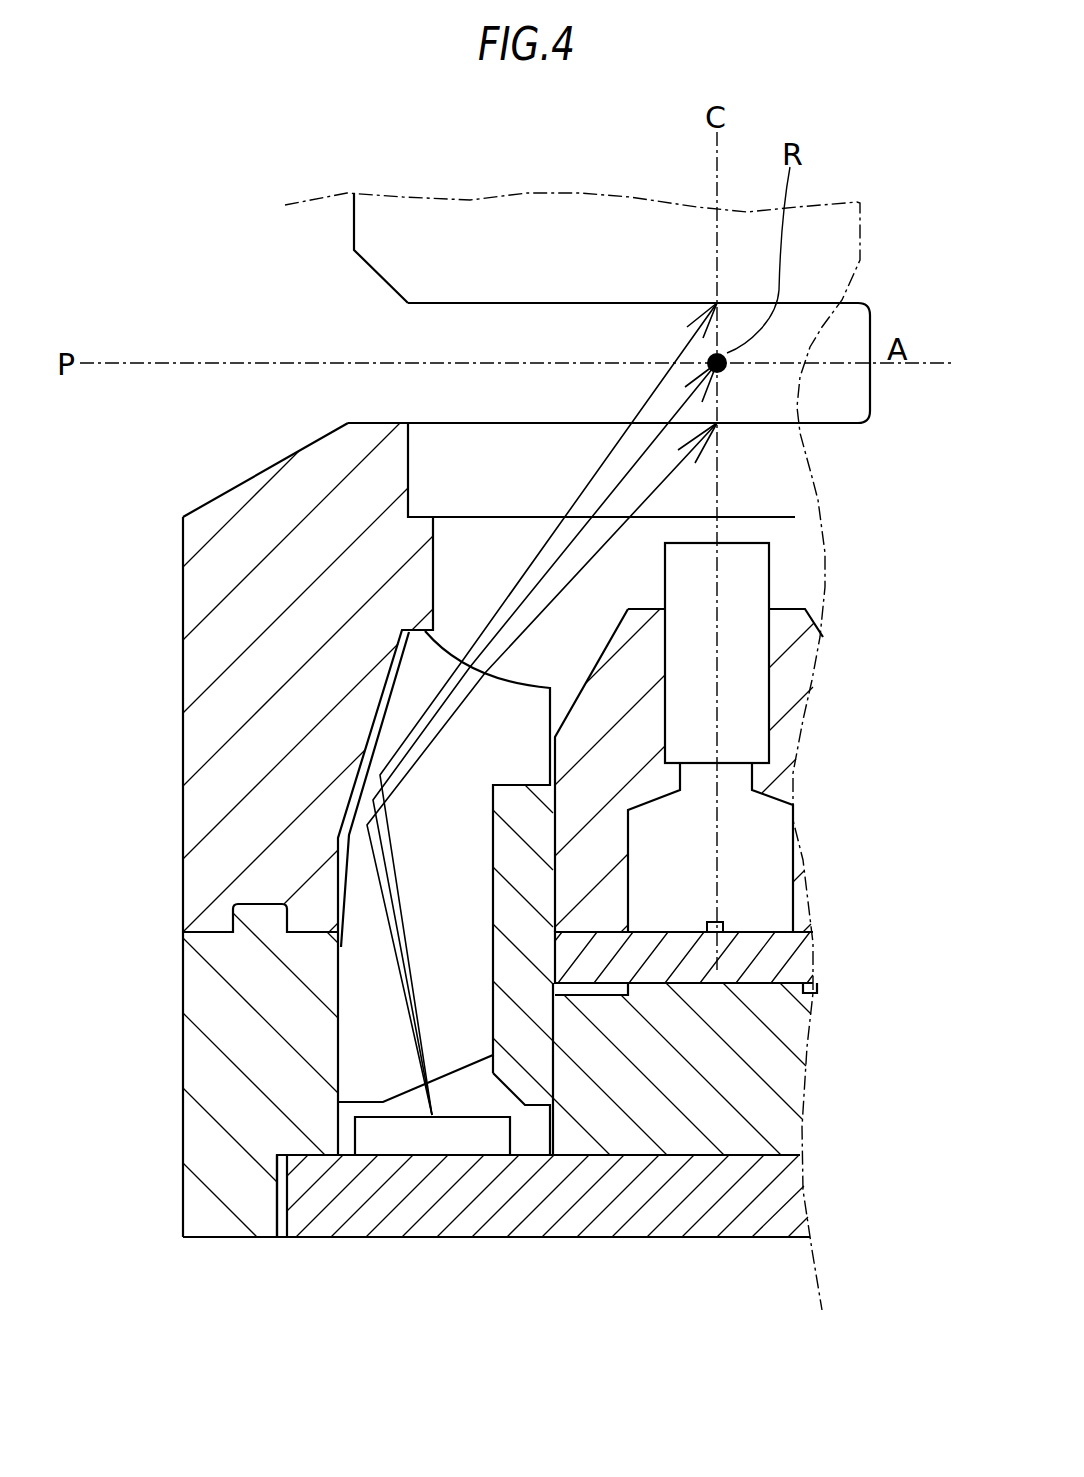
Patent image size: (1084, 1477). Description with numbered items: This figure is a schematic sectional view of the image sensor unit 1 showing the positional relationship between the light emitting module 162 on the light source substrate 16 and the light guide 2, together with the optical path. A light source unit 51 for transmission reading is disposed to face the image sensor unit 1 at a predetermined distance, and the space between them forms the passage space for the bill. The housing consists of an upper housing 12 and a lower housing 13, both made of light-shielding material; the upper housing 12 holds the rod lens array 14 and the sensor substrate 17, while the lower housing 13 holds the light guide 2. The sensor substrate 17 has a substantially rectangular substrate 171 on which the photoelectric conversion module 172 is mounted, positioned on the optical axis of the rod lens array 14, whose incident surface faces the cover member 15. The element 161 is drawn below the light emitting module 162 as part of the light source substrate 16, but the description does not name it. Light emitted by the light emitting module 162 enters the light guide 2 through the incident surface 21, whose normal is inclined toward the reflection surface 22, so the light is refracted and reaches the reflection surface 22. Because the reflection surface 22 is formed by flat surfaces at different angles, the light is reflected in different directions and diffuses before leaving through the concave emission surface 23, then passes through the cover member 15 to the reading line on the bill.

The image sensor unit 1 is at (246, 1288).
The light source unit for transmission reading 51 is at (447, 227).
The light guide 2 is at (357, 1045).
The upper housing 12 is at (245, 483).
The lower housing 13 is at (183, 987).
The rod lens array 14 is at (753, 577).
The cover member 15 is at (772, 478).
The light source substrate 16 is at (542, 1256).
The substrate 161 is at (523, 1240).
The light emitting module 162 is at (423, 1140).
The sensor substrate 17 is at (908, 893).
The substrate 171 is at (805, 961).
The photoelectric conversion module 172 is at (723, 921).
The incident surface 21 is at (478, 1063).
The reflection surface 22 is at (375, 733).
The emission surface 23 is at (433, 630).